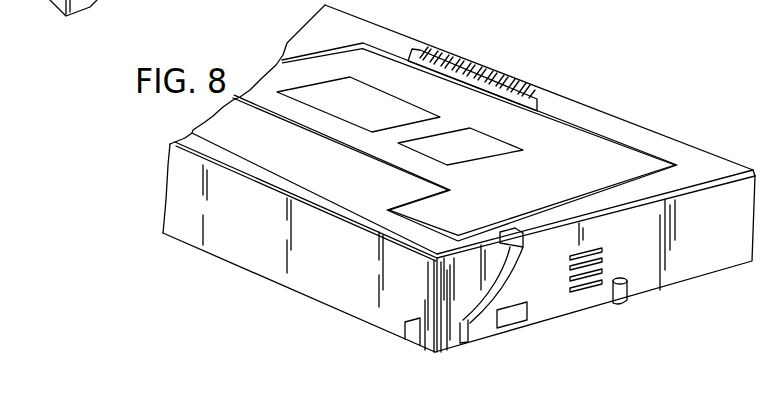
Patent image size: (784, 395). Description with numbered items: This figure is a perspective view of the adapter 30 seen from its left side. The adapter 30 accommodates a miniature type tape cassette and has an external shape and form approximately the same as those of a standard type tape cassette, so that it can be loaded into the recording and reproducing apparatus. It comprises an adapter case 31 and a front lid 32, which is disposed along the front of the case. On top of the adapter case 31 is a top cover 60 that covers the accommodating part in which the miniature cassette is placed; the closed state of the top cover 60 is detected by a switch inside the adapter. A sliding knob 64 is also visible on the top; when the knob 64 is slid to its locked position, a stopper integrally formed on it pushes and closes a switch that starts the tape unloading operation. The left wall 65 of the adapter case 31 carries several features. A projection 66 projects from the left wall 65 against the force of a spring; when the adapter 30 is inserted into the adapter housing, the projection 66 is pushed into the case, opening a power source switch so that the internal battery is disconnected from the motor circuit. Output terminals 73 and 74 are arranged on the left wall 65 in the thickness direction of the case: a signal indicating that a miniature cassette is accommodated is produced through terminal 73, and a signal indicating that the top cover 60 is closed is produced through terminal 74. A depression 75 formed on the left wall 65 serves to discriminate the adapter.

The adapter 30 is at (478, 45).
The adapter case 31 is at (638, 132).
The front lid 32 is at (270, 273).
The top cover 60 is at (553, 130).
The sliding knob 64 is at (480, 71).
The left wall 65 is at (688, 275).
The projection 66 is at (623, 297).
The output terminal 73 is at (567, 256).
The output terminal 74 is at (567, 256).
The depression 75 is at (515, 315).